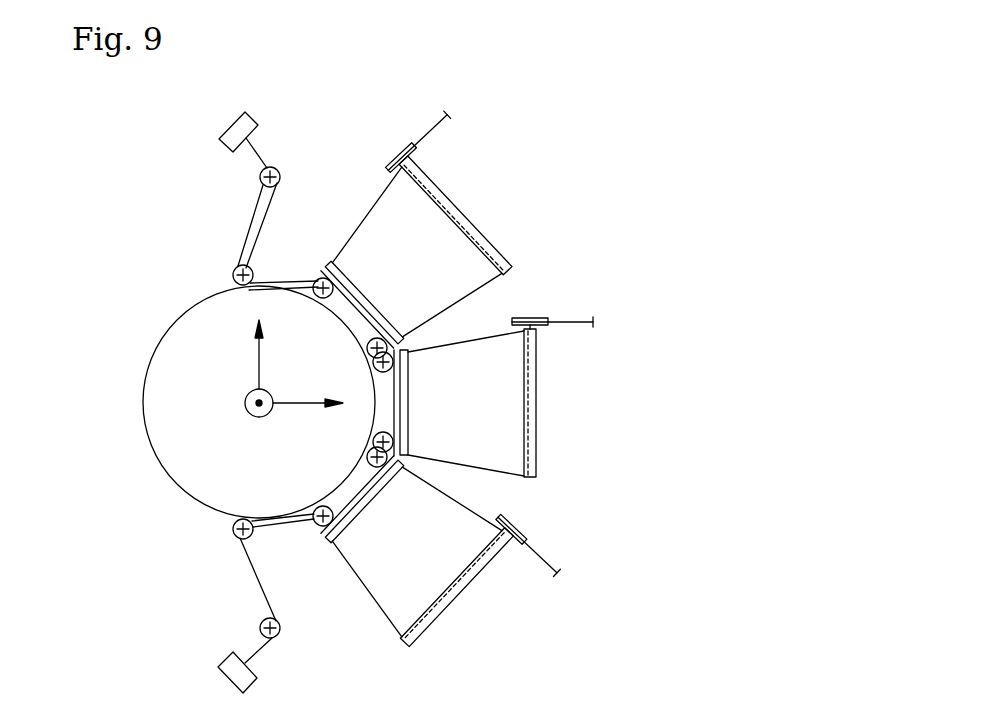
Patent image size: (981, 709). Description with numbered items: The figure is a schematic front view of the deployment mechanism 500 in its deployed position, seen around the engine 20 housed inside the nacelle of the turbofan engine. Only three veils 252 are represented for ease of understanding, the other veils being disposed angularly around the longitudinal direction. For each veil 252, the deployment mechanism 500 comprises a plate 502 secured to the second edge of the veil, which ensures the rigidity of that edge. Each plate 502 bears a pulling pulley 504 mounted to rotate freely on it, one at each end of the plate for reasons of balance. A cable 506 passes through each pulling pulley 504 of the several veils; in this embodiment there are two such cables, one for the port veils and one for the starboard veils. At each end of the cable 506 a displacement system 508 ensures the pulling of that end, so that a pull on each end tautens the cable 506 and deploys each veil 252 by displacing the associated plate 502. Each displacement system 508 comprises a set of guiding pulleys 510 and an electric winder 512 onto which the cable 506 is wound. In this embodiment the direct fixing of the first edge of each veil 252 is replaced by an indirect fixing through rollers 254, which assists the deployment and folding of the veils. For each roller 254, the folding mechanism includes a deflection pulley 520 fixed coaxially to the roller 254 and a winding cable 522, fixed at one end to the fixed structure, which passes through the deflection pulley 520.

The engine 20 is at (145, 422).
The deployment mechanism 500 is at (160, 188).
The plate 502 is at (403, 399).
The pulling pulley 504 is at (393, 443).
The cable 506 is at (245, 558).
The displacement system 508 is at (455, 219).
The guiding pulleys 510 is at (237, 265).
The electric winder 512 is at (228, 139).
The veil 252 is at (463, 242).
The roller 254 is at (505, 277).
The deflection pulley 520 is at (536, 320).
The winding cable 522 is at (543, 557).